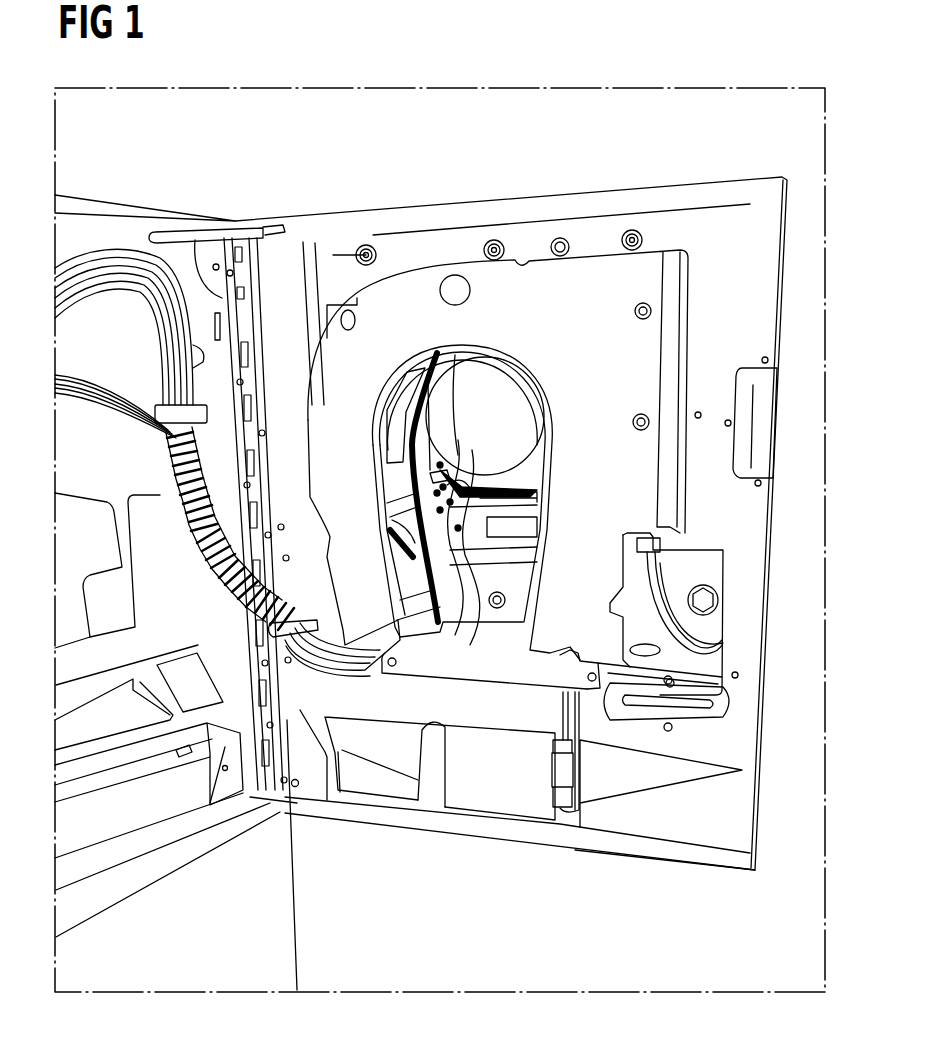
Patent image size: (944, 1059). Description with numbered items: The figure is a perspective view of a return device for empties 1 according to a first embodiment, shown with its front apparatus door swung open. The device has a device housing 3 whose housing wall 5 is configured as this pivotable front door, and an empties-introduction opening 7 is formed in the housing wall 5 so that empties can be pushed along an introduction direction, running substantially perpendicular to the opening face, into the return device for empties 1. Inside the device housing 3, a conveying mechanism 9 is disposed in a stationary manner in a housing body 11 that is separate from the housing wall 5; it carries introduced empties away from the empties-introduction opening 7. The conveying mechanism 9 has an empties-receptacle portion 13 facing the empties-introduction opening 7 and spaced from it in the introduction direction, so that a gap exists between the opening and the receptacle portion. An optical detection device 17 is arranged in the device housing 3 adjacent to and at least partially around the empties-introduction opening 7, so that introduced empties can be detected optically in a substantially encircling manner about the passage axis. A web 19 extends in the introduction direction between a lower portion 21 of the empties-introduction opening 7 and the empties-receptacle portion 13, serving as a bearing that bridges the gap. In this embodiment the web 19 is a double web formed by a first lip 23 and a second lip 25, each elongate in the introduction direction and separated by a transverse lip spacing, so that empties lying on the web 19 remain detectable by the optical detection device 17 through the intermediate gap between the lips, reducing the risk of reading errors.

The return device for empties 1 is at (398, 167).
The device housing 3 is at (222, 221).
The housing wall 5 is at (685, 822).
The empties-introduction opening 7 is at (513, 398).
The conveying mechanism 9 is at (147, 808).
The housing body 11 is at (178, 216).
The empties-receptacle portion 13 is at (220, 793).
The optical detection device 17 is at (583, 289).
The web 19 is at (463, 612).
The lower portion 21 is at (455, 476).
The first lip 23 is at (397, 550).
The second lip 25 is at (500, 492).